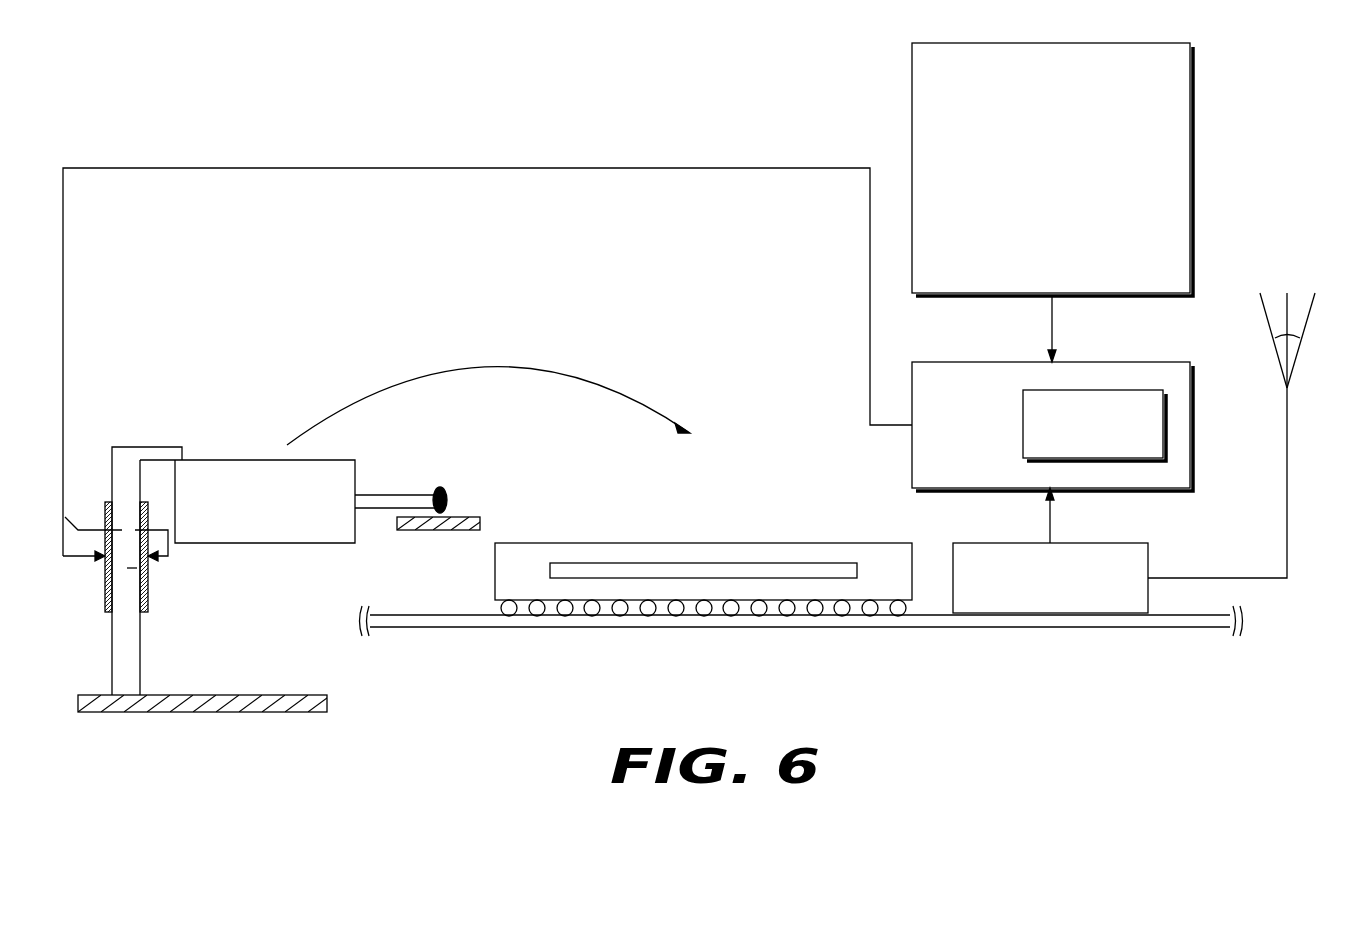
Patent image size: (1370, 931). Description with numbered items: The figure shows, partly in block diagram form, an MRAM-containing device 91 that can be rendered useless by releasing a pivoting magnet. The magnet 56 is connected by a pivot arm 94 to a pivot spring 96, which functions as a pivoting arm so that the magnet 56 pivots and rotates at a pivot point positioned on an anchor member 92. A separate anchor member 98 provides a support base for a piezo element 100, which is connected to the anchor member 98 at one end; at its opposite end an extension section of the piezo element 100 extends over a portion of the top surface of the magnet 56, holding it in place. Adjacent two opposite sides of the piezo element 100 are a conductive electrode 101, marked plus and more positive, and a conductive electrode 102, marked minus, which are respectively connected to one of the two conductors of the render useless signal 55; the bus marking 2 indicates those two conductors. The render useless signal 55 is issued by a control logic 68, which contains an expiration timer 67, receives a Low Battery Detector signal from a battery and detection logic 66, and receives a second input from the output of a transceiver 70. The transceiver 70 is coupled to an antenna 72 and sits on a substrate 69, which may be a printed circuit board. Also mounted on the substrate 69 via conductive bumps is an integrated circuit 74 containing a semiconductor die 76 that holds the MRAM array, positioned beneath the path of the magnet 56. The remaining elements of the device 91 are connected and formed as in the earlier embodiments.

The wire / cable 2 is at (877, 287).
The render useless signal 55 is at (633, 168).
The magnet 56 is at (308, 528).
The battery and detection logic 66 is at (1108, 251).
The expiration timer 67 is at (1167, 422).
The control logic 68 is at (968, 475).
The substrate 69 is at (497, 622).
The transceiver 70 is at (1150, 560).
The antenna 72 is at (1295, 368).
The integrated circuit 74 is at (495, 568).
The semiconductor die 76 is at (840, 560).
The MRAM-containing device 91 is at (801, 607).
The anchor member 92 is at (418, 530).
The pivot arm 94 is at (378, 495).
The pivot spring 96 is at (448, 499).
The anchor member 98 is at (190, 702).
The piezo element 100 is at (133, 450).
The conductive electrode 101 is at (103, 585).
The conductive electrode 102 is at (152, 588).